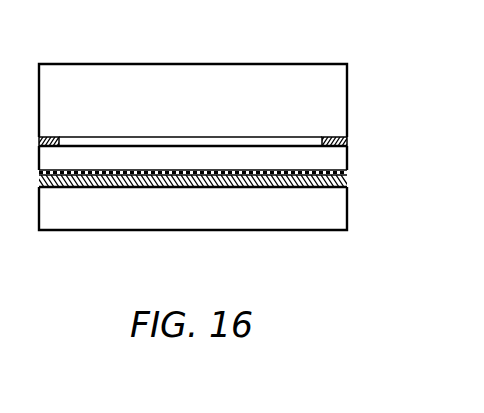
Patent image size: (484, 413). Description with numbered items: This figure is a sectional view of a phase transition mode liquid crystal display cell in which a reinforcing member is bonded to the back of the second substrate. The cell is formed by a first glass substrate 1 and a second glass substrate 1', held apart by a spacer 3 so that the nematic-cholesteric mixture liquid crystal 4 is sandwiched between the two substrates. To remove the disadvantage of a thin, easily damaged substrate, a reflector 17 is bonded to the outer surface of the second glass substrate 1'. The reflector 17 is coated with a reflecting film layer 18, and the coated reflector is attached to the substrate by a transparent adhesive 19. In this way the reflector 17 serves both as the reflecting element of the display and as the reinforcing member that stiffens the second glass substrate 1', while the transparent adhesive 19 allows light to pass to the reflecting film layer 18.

The first glass substrate 1 is at (220, 85).
The second glass substrate 1' is at (220, 149).
The spacer 3 is at (336, 137).
The nematic-cholesteric mixture liquid crystal 4 is at (235, 142).
The reflector 17 is at (268, 212).
The reflecting film layer 18 is at (348, 180).
The transparent adhesive 19 is at (345, 176).